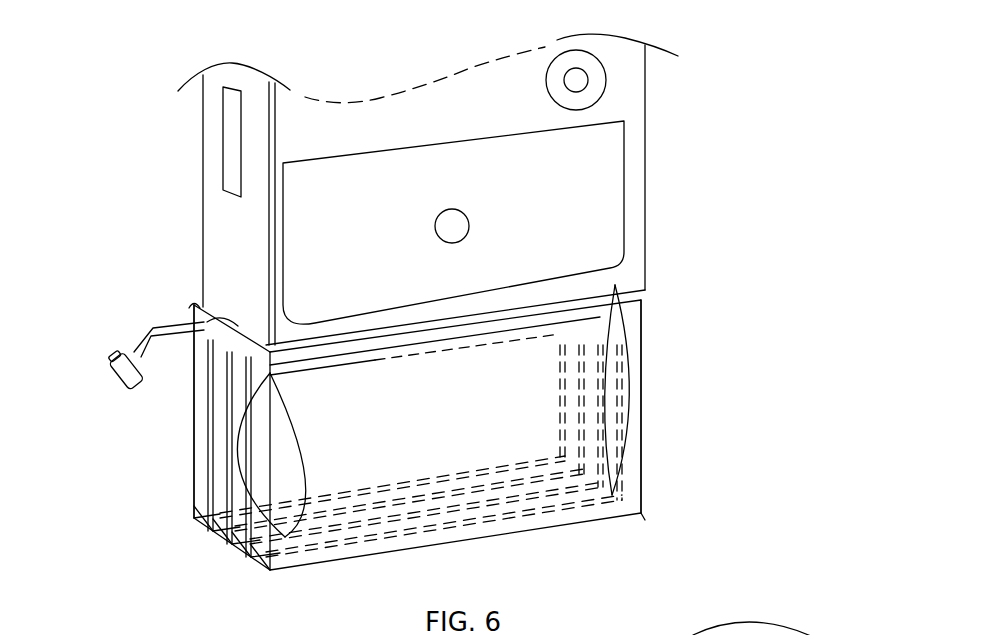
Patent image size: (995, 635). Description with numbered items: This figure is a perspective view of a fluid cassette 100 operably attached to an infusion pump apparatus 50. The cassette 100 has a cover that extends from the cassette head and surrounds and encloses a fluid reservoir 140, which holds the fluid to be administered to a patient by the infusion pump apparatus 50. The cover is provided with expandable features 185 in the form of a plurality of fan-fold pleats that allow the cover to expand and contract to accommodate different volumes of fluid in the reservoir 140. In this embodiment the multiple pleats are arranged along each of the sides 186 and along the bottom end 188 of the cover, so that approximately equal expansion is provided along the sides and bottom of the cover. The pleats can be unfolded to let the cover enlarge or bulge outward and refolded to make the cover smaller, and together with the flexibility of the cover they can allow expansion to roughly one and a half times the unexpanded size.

The infusion pump apparatus 50 is at (635, 169).
The cassette 100 is at (652, 278).
The fluid reservoir 140 is at (612, 362).
The expandable features 185 is at (233, 510).
The sides 186 is at (193, 460).
The bottom end 188 is at (237, 545).